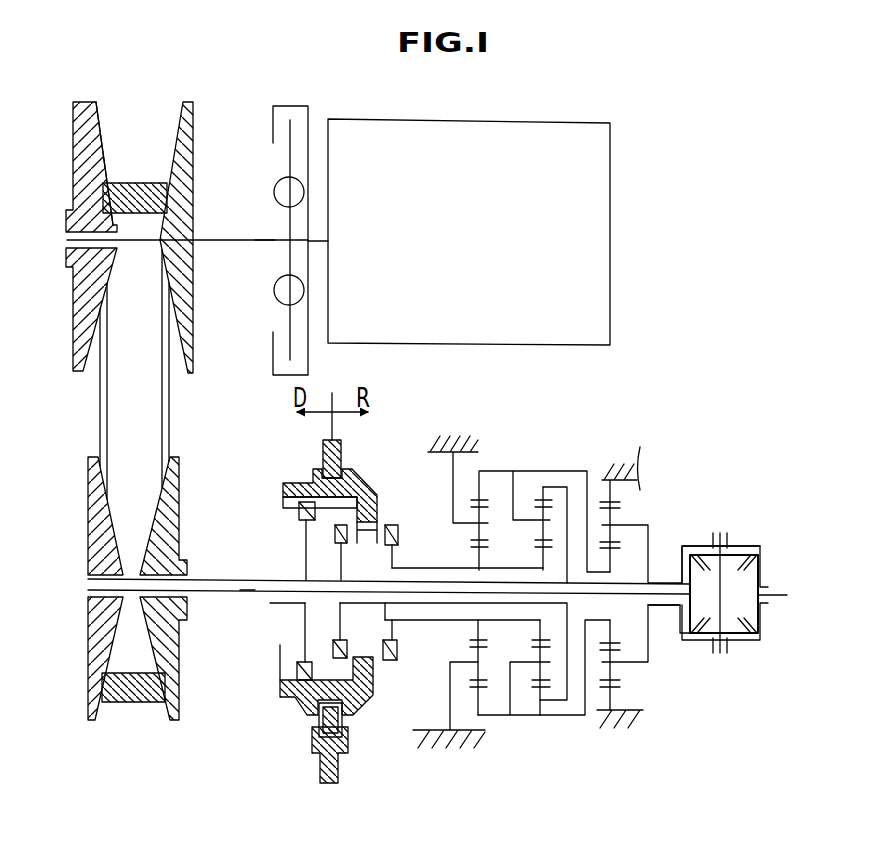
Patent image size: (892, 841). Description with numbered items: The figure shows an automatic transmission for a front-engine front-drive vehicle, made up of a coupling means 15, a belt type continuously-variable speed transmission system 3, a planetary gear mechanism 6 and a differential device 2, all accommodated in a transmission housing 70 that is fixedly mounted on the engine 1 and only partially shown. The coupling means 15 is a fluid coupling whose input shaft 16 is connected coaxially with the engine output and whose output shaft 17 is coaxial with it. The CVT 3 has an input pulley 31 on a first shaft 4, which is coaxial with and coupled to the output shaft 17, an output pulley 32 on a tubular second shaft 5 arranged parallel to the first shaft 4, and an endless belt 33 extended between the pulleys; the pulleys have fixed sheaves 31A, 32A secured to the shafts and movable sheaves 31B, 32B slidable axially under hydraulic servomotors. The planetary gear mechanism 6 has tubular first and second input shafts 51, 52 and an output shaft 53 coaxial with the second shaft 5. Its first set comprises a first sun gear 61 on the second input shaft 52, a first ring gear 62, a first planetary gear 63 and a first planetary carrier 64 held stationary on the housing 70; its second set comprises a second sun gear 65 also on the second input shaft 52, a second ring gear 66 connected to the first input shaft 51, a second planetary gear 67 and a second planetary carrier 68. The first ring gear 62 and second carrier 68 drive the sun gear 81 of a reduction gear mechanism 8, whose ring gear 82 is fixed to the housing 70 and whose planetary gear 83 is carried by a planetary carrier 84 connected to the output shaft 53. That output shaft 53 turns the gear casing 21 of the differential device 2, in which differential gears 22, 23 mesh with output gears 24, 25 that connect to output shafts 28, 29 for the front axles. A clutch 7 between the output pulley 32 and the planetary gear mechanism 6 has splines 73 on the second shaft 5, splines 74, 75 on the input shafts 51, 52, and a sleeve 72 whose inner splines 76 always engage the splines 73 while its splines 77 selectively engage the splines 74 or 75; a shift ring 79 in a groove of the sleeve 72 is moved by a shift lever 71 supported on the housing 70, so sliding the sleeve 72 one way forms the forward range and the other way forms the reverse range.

The engine 1 is at (613, 290).
The differential device 2 is at (736, 575).
The belt type continuously-variable speed transmission system 3 is at (158, 263).
The first shaft 4 is at (230, 240).
The second shaft 5 is at (233, 579).
The planetary gear mechanism 6 is at (550, 588).
The clutch 7 is at (323, 592).
The reduction gear mechanism 8 is at (646, 447).
The coupling means 15 is at (300, 100).
The input shaft 16 is at (320, 240).
The output shaft 17 is at (268, 247).
The gear casing 21 is at (713, 548).
The differential gear 22 is at (735, 555).
The differential gear 23 is at (735, 637).
The output gear 24 is at (691, 634).
The output gear 25 is at (755, 575).
The output shaft 28 is at (247, 592).
The output shaft 29 is at (780, 600).
The input pulley 31 is at (89, 103).
The fixed sheave 31A is at (193, 127).
The movable sheave 31B is at (88, 147).
The output pulley 32 is at (159, 628).
The fixed sheave 32A is at (87, 722).
The movable sheave 32B is at (183, 675).
The endless belt 33 is at (132, 690).
The first input shaft 51 is at (388, 603).
The second input shaft 52 is at (417, 567).
The output shaft 53 is at (665, 606).
The first sun gear 61 is at (480, 640).
The first ring gear 62 is at (482, 484).
The first planetary gear 63 is at (472, 532).
The first planetary carrier 64 is at (460, 662).
The second sun gear 65 is at (537, 633).
The second ring gear 66 is at (537, 487).
The second planetary gear 67 is at (532, 680).
The second planetary carrier 68 is at (533, 525).
The transmission housing 70 is at (455, 452).
The shift lever 71 is at (338, 770).
The sleeve 72 is at (370, 489).
The splines 73 is at (303, 516).
The splines 74 is at (333, 648).
The splines 75 is at (388, 660).
The splines 76 is at (283, 491).
The splines 77 is at (366, 543).
The shift ring 79 is at (323, 447).
The sun gear 81 is at (613, 553).
The ring gear 82 is at (607, 488).
The planetary gear 83 is at (616, 522).
The planetary carrier 84 is at (629, 660).